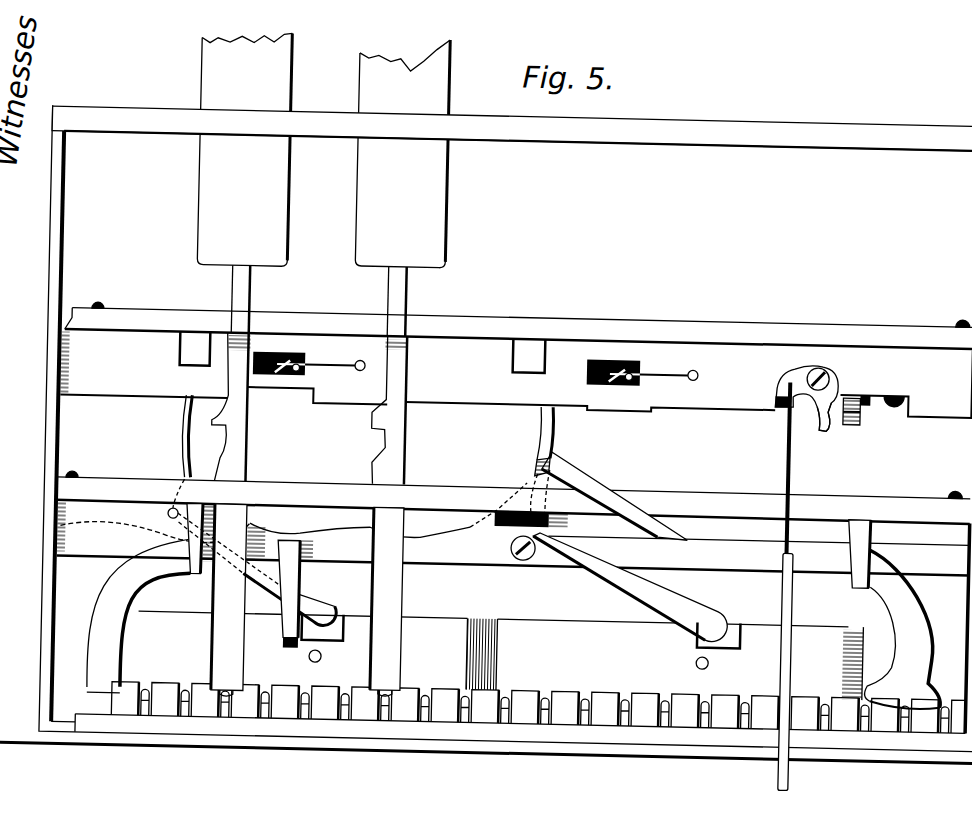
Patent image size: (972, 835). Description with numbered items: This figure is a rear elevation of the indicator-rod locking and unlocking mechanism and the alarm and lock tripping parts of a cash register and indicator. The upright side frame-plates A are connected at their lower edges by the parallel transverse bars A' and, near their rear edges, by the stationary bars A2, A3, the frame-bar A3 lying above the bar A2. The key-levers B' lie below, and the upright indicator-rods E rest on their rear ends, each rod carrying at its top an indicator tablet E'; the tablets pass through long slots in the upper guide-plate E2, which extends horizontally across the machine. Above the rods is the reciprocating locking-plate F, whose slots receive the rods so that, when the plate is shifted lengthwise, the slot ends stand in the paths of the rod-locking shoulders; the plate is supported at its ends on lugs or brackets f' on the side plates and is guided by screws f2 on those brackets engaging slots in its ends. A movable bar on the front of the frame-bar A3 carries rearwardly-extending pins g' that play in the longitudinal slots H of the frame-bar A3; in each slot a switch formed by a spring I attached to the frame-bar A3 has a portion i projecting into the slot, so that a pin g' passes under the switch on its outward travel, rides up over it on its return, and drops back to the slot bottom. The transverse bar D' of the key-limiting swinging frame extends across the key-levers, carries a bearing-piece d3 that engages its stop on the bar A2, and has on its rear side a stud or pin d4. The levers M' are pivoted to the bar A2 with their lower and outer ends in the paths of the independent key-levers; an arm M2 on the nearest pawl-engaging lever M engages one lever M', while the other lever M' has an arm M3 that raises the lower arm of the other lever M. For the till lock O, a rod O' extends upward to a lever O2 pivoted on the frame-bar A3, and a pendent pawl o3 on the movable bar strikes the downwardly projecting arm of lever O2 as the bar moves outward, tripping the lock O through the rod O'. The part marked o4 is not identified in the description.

The indicator plate or tablet E' is at (323, 184).
The upper guide-plate E2 is at (573, 122).
The locking-plate F is at (485, 306).
The lug or bracket f' is at (47, 320).
The screw f2 is at (107, 300).
The longitudinal slot H is at (290, 356).
The spring I is at (323, 356).
The projecting portion of spring i is at (290, 374).
The pin or stud g' is at (465, 392).
The upper stationary frame-bar A3 is at (516, 374).
The indicator-rod E is at (315, 516).
The pawl-engaging lever M is at (366, 512).
The arm of lever M M2 is at (618, 485).
The lever O2 is at (801, 355).
The pendent pawl o3 is at (866, 396).
The hook o4 is at (817, 426).
The rod O' is at (772, 468).
The drawer or till lock O is at (796, 672).
The side frame-plate A is at (486, 513).
The lever M' is at (501, 592).
The lower stationary frame-bar A2 is at (486, 546).
The arm of lever M' M3 is at (290, 620).
The transverse bar of swinging frame D' is at (500, 655).
The bearing plate or piece d3 is at (354, 608).
The stud or pin d4 is at (335, 649).
The key-lever B' is at (520, 707).
The transverse bar A' is at (486, 768).